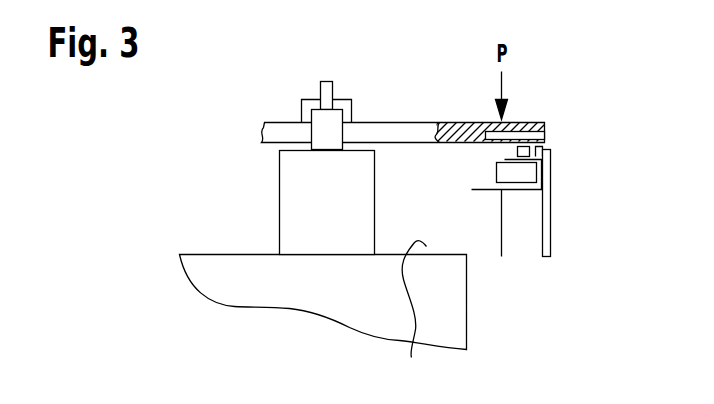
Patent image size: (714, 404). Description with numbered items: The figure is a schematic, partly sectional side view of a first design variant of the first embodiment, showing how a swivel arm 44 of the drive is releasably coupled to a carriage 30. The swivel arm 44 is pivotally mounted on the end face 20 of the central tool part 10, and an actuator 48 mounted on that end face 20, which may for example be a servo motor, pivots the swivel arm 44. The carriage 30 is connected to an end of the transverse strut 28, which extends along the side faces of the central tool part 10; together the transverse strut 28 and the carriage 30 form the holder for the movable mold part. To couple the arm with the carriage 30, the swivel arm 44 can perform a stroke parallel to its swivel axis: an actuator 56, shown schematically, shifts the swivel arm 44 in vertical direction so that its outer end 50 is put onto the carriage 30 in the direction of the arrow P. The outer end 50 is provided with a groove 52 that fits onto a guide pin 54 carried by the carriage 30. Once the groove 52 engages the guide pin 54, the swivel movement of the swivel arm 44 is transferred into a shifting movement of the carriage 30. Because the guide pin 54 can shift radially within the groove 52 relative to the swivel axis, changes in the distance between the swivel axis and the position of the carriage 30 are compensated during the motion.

The central tool part 10 is at (248, 292).
The end face 20 is at (412, 315).
The transverse strut 28 is at (552, 210).
The carriage 30 is at (545, 150).
The swivel arm 44 is at (418, 130).
The actuator 48 is at (298, 198).
The outer end 50 is at (535, 127).
The groove 52 is at (537, 137).
The guide pin 54 is at (512, 148).
The actuator 56 is at (328, 93).